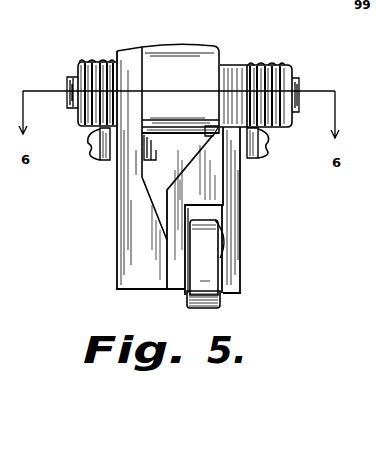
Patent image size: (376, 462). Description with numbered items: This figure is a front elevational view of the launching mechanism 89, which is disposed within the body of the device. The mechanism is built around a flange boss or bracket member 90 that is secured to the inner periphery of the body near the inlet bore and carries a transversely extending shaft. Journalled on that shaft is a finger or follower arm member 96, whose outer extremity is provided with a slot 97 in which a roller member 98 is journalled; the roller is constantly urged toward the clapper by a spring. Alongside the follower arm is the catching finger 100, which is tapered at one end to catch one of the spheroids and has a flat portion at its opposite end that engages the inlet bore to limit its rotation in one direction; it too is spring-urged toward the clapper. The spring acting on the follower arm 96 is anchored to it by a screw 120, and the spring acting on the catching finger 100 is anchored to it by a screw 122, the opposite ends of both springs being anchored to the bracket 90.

The launching mechanism 89 is at (200, 56).
The bracket member 90 is at (163, 58).
The follower arm member 96 is at (232, 189).
The slot 97 is at (221, 257).
The roller member 98 is at (221, 302).
The catching finger 100 is at (128, 224).
The screw 120 is at (264, 152).
The screw 122 is at (96, 160).